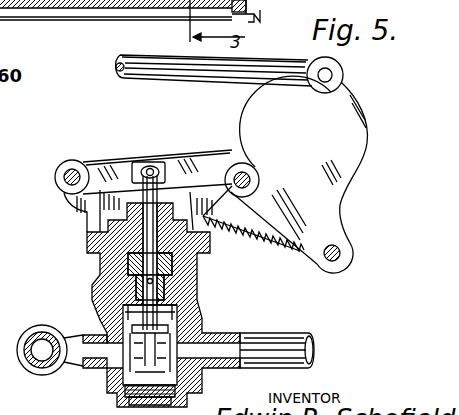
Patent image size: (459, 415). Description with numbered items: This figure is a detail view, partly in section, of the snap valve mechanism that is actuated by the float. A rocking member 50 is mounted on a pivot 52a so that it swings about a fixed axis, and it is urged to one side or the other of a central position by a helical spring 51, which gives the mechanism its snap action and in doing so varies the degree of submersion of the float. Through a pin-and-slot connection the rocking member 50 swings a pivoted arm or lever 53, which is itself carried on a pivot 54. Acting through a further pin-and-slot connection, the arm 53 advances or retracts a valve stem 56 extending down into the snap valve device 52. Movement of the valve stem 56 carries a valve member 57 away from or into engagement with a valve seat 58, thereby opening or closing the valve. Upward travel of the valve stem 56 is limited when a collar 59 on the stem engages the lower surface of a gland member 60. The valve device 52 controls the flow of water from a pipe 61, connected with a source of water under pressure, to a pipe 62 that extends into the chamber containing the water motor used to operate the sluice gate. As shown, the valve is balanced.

The rocking member 50 is at (372, 133).
The helical spring 51 is at (247, 248).
The snap valve device 52 is at (93, 288).
The pivot 52a is at (247, 176).
The pivoted arm or lever 53 is at (170, 157).
The pivot 54 is at (69, 164).
The valve stem 56 is at (157, 232).
The valve member 57 is at (184, 312).
The valve seat 58 is at (173, 328).
The collar 59 is at (133, 288).
The gland member 60 is at (128, 262).
The pipe 61 is at (275, 334).
The pipe 62 is at (44, 374).